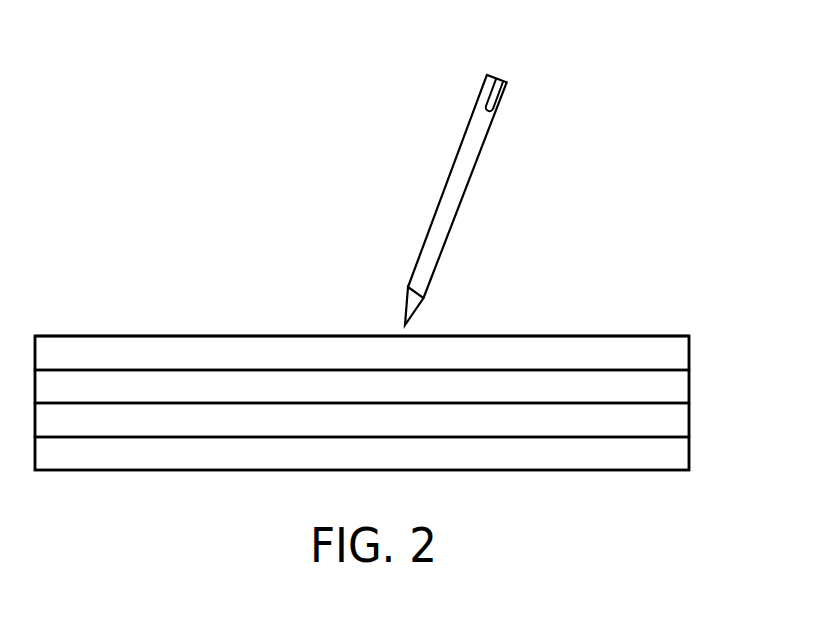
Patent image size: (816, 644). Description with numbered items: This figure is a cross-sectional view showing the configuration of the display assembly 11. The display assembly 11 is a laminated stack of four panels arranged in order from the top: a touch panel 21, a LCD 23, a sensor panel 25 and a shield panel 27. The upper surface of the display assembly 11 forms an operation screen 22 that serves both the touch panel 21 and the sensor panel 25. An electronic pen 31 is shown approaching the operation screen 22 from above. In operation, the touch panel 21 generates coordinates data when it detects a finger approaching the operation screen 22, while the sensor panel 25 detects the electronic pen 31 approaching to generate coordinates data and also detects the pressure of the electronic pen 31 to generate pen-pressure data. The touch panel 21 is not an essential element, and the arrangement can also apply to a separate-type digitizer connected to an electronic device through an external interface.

The display assembly 11 is at (618, 252).
The touch panel 21 is at (689, 351).
The operation screen 22 is at (515, 335).
The LCD 23 is at (689, 385).
The sensor panel 25 is at (689, 418).
The shield panel 27 is at (689, 452).
The electronic pen 31 is at (498, 78).